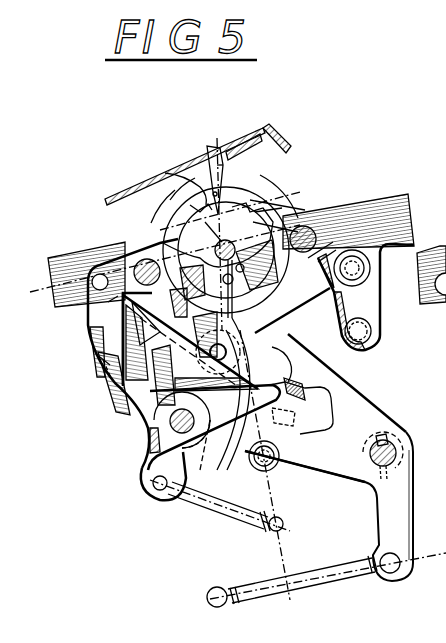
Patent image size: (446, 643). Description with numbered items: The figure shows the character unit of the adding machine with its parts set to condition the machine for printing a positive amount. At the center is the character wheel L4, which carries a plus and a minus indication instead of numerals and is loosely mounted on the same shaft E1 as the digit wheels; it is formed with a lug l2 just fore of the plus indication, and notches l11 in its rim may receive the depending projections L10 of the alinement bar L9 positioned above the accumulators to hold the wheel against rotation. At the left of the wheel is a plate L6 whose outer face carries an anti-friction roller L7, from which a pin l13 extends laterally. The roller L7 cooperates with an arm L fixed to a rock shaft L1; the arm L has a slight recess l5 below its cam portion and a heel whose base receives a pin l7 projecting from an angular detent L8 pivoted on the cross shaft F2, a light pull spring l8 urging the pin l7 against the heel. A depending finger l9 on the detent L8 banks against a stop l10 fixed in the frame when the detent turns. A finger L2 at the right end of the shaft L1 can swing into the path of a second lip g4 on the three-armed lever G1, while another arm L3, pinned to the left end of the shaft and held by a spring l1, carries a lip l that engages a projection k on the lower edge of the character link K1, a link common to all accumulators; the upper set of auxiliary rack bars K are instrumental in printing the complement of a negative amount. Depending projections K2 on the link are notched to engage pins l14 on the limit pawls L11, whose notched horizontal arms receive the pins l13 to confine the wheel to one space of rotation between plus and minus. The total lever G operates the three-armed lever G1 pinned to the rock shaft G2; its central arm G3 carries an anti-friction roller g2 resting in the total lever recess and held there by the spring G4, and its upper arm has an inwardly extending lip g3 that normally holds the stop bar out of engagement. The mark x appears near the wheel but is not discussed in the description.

The auxiliary rack bars K is at (406, 200).
The character link K1 is at (60, 262).
The depending projections K2 is at (382, 293).
The arm L is at (232, 446).
The rock shaft L1 is at (138, 467).
The finger L2 is at (248, 465).
The arm L3 is at (107, 383).
The character wheel L4 is at (268, 205).
The plate L6 is at (238, 198).
The anti-friction roller L7 is at (212, 238).
The angular detent L8 is at (117, 263).
The alinement bar L9 is at (254, 139).
The depending projections L10 is at (168, 170).
The limit pawl L11 is at (318, 250).
The shaft E1 is at (236, 248).
The cross shaft F2 is at (145, 259).
The point x is at (212, 226).
The lip l is at (127, 302).
The spring l1 is at (220, 516).
The lug l2 is at (185, 195).
The recess l5 is at (244, 332).
The pin l7 is at (213, 355).
The pull spring l8 is at (442, 316).
The depending finger l9 is at (100, 357).
The stop l10 is at (123, 420).
The notches l11 is at (258, 212).
The pin l13 is at (222, 284).
The pin l14 is at (363, 341).
The projection k is at (143, 318).
The anti-friction roller g2 is at (261, 472).
The lip g3 is at (283, 318).
The second lip g4 is at (294, 384).
The total lever G is at (405, 538).
The three-armed lever G1 is at (367, 402).
The rock shaft G2 is at (393, 443).
The central arm G3 is at (326, 470).
The spring G4 is at (242, 590).